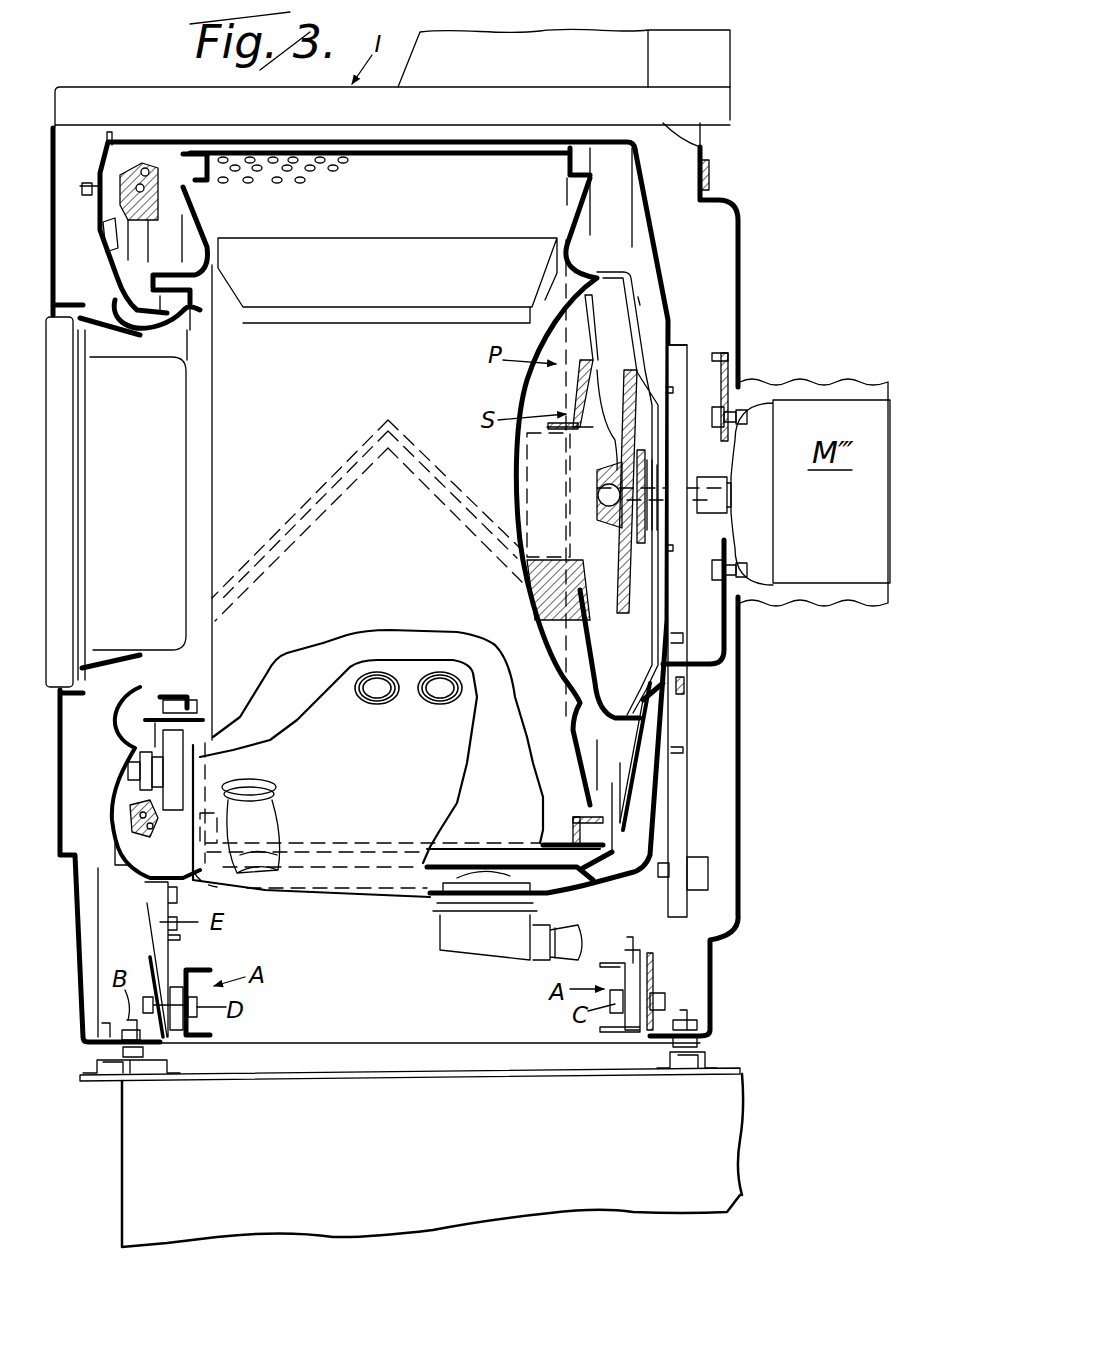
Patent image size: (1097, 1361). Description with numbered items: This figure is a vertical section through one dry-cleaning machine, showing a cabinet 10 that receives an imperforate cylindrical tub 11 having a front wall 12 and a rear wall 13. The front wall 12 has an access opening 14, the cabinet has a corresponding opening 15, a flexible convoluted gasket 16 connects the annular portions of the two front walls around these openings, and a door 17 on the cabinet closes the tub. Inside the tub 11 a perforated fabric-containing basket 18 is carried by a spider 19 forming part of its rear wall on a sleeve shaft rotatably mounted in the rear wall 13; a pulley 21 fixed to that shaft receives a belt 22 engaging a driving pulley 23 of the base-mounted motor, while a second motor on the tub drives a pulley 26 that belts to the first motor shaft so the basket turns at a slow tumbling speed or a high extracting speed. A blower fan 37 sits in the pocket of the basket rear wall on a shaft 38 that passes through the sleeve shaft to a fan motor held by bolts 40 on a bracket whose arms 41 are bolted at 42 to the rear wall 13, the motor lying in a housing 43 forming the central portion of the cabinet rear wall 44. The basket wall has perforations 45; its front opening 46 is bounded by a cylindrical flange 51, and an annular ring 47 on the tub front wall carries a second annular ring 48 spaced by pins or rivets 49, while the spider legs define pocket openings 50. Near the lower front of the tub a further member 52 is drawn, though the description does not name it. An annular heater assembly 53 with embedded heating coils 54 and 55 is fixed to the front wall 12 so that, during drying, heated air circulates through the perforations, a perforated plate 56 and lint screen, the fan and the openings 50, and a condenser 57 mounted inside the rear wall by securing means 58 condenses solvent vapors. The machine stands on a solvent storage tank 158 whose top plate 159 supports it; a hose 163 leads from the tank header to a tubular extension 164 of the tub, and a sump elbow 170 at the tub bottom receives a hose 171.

The cabinet 10 is at (42, 128).
The tub 11 is at (214, 144).
The front wall 12 is at (106, 265).
The rear wall 13 is at (657, 268).
The access opening 14 is at (178, 338).
The opening 15 is at (100, 350).
The flexible convoluted gasket 16 is at (142, 653).
The door 17 is at (62, 461).
The basket 18 is at (402, 142).
The spider 19 is at (642, 300).
The pulley 21 is at (688, 346).
The belt 22 is at (688, 812).
The driving pulley 23 is at (700, 872).
The pulley 26 is at (673, 490).
The blower fan 37 is at (600, 373).
The shaft 38 is at (606, 495).
The bolts 40 is at (714, 410).
The arms 41 is at (740, 646).
The bolts 42 is at (690, 678).
The housing 43 is at (836, 606).
The rear wall 44 is at (745, 258).
The openings 45 is at (301, 185).
The opening 46 is at (146, 285).
The annular ring 47 is at (178, 340).
The second annular ring 48 is at (205, 306).
The pins or rivets 49 is at (190, 708).
The openings 50 is at (641, 331).
The cylindrical flange 51 is at (126, 721).
The block 52 is at (190, 783).
The annular heater assembly 53 is at (150, 217).
The heating coil 54 is at (137, 170).
The heating coil 55 is at (160, 188).
The perforated plate 56 is at (530, 607).
The condenser 57 is at (660, 736).
The securing means 58 is at (665, 713).
The solvent storage tank 158 is at (735, 1128).
The top plate 159 is at (742, 1069).
The hose 163 is at (258, 832).
The tubular extension 164 is at (276, 795).
The sump elbow 170 is at (466, 942).
The hose 171 is at (576, 940).